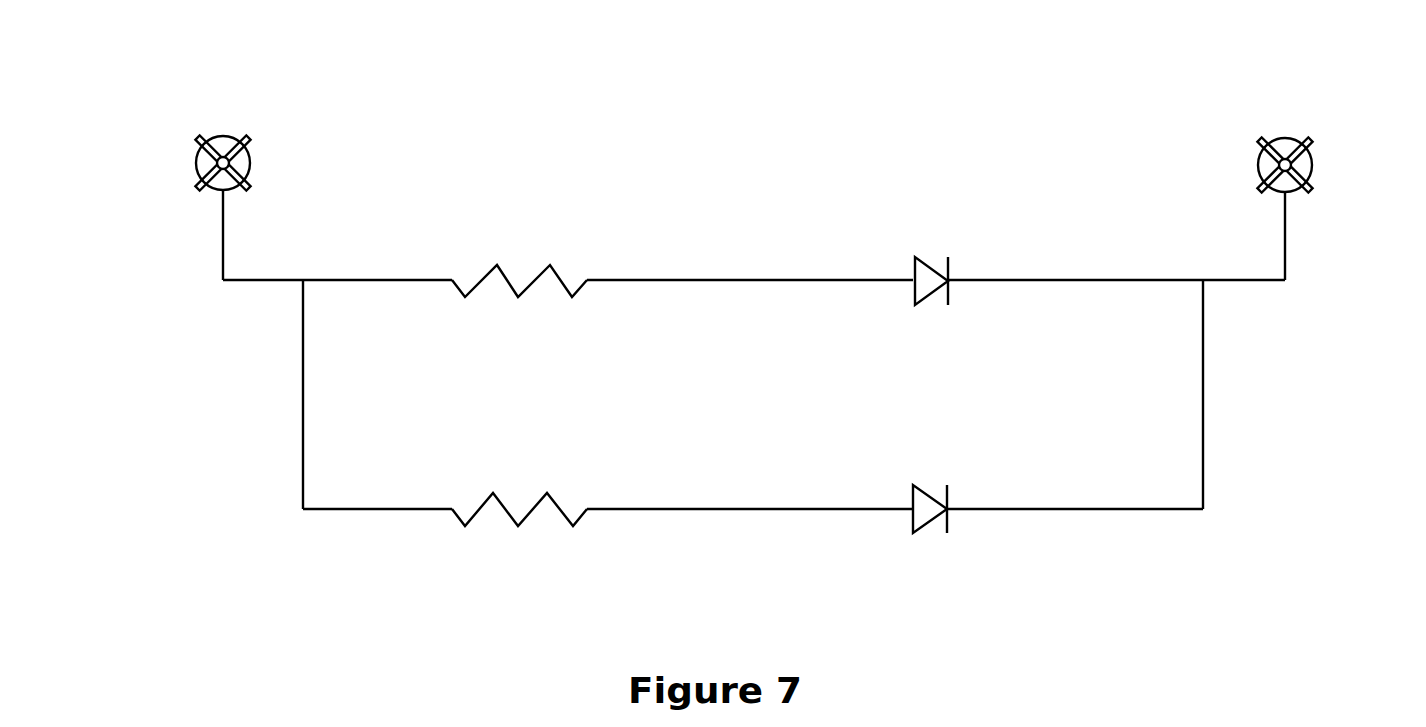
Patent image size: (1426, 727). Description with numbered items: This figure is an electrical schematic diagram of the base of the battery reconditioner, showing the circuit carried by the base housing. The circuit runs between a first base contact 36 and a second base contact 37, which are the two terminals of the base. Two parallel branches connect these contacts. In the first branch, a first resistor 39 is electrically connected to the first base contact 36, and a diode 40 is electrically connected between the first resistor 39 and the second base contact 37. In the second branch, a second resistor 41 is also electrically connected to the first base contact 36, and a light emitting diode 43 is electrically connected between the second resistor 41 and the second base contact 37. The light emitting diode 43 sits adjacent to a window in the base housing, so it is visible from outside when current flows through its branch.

The first base contact 36 is at (198, 165).
The second base contact 37 is at (1312, 169).
The first resistor 39 is at (553, 273).
The diode 40 is at (913, 280).
The second resistor 41 is at (503, 512).
The light emitting diode 43 is at (950, 519).